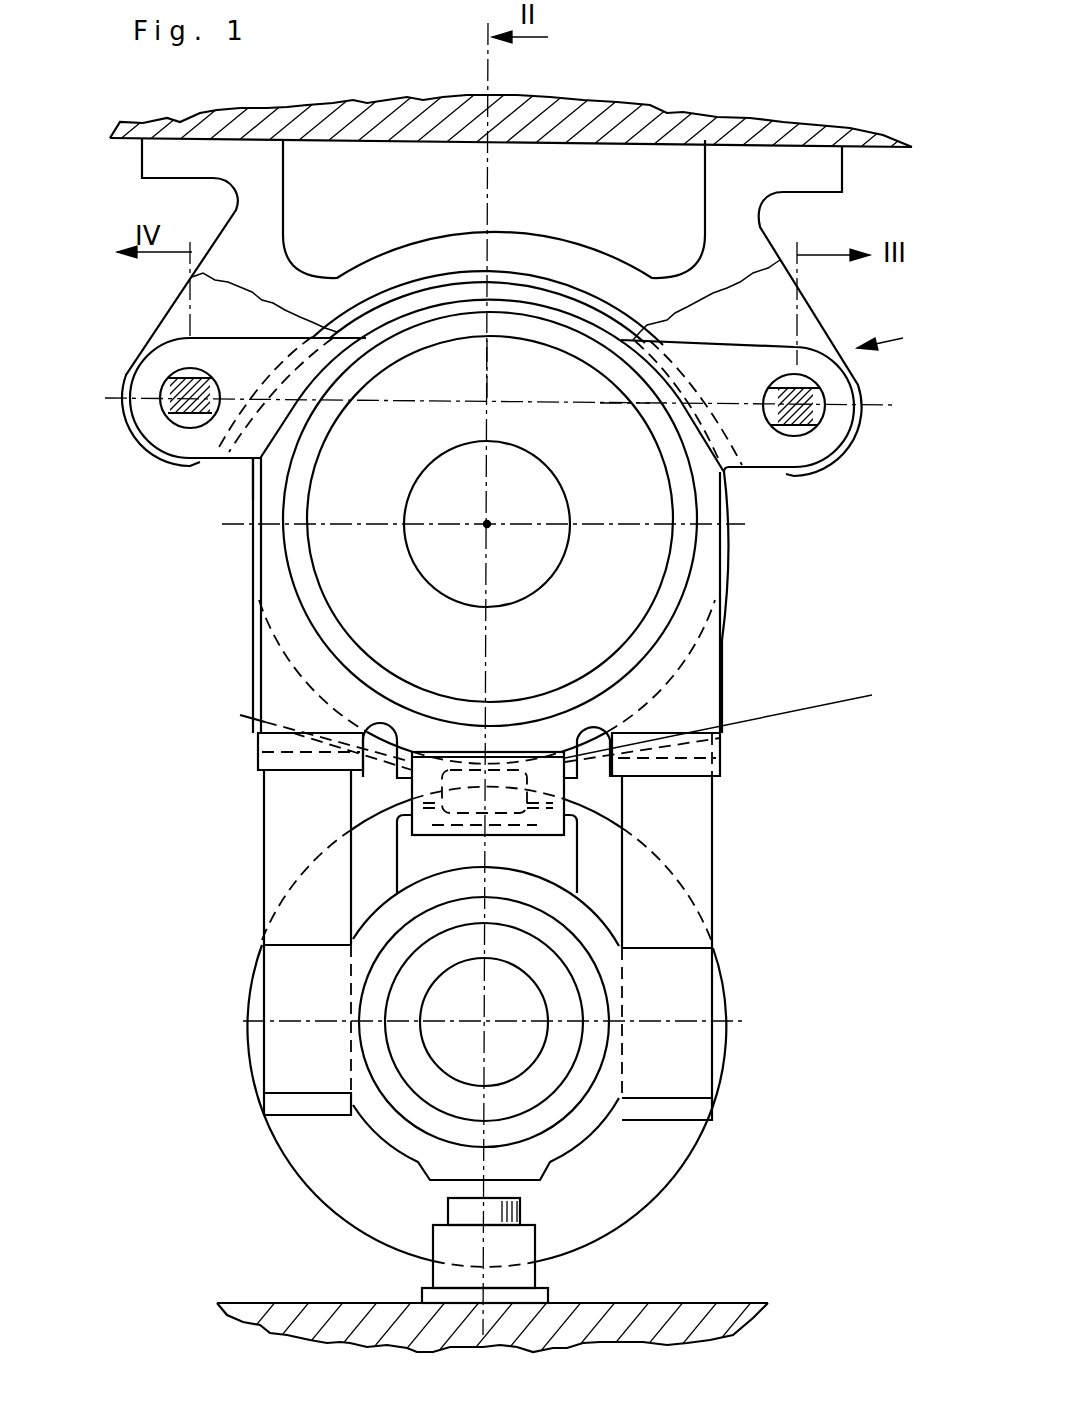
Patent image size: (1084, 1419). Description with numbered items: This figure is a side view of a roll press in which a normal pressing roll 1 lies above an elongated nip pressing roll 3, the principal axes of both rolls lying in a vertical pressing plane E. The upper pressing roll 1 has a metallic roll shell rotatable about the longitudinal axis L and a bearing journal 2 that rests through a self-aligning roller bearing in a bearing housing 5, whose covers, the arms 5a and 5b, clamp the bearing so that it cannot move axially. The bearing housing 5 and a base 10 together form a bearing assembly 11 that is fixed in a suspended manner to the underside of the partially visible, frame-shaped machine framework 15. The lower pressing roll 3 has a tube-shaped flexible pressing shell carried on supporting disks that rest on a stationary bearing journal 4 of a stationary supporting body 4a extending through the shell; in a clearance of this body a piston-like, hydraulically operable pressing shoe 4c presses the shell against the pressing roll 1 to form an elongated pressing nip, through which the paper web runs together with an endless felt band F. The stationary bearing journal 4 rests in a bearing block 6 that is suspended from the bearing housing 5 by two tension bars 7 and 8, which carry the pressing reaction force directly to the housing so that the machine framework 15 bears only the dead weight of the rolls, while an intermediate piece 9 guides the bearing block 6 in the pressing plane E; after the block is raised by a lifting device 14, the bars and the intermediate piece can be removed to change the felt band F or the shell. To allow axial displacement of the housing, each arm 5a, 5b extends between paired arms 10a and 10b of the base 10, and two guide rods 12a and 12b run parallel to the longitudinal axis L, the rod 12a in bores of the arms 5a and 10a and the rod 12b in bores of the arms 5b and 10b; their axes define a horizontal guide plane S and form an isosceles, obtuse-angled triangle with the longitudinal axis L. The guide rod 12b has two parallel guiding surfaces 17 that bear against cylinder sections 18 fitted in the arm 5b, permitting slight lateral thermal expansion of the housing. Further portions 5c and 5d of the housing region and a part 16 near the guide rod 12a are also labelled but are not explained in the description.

The normal pressing roll 1 is at (257, 492).
The bearing journal 2 is at (428, 552).
The elongated nip pressing roll 3 is at (373, 1217).
The stationary bearing journal 4 is at (560, 1100).
The stationary supporting body 4a is at (534, 790).
The pressing shoe 4c is at (497, 793).
The bearing housing 5 is at (272, 560).
The arm of the bearing housing 5a is at (797, 447).
The arm of the bearing housing 5b is at (148, 420).
The right flange 5c is at (716, 733).
The left flange 5d is at (300, 670).
The bearing block 6 is at (403, 1133).
The tension bar 7 is at (290, 818).
The tension bar 8 is at (700, 825).
The intermediate piece 9 is at (412, 788).
The base 10 is at (835, 170).
The arm of the base 10a is at (713, 253).
The arm of the base 10b is at (173, 328).
The bearing assembly 11 is at (897, 340).
The guide rod 12a is at (808, 398).
The guide rod 12b is at (170, 380).
The lifting device 14 is at (525, 1252).
The machine framework 15 is at (613, 130).
The washer 16 is at (815, 420).
The guiding surfaces 17 is at (187, 417).
The cylinder sections 18 is at (207, 370).
The pressing plane E is at (486, 378).
The guide plane S is at (613, 405).
The longitudinal axis L is at (487, 524).
The felt band F is at (843, 703).